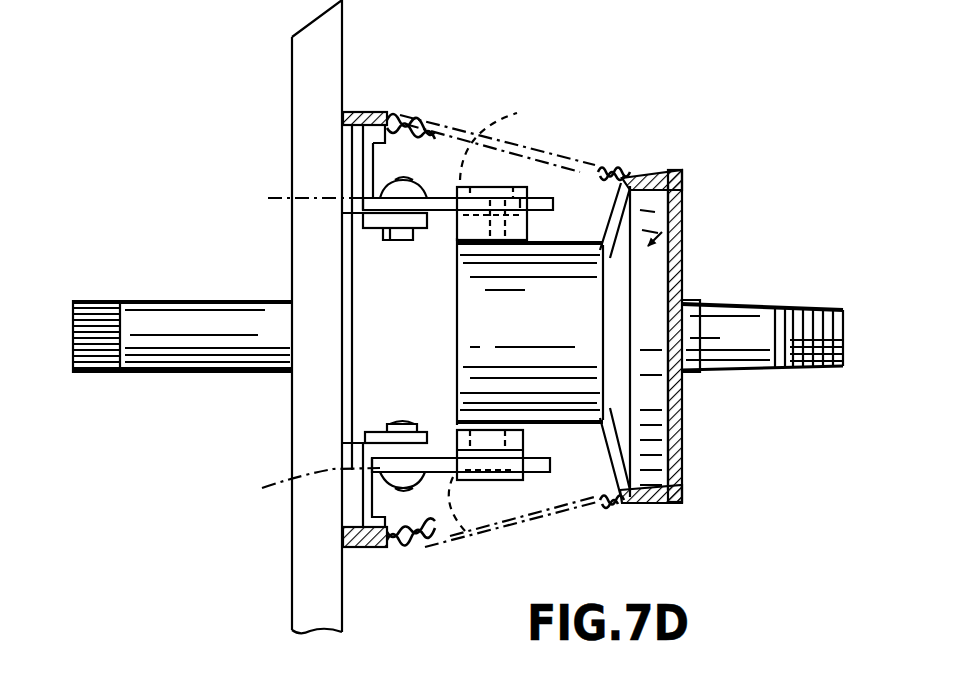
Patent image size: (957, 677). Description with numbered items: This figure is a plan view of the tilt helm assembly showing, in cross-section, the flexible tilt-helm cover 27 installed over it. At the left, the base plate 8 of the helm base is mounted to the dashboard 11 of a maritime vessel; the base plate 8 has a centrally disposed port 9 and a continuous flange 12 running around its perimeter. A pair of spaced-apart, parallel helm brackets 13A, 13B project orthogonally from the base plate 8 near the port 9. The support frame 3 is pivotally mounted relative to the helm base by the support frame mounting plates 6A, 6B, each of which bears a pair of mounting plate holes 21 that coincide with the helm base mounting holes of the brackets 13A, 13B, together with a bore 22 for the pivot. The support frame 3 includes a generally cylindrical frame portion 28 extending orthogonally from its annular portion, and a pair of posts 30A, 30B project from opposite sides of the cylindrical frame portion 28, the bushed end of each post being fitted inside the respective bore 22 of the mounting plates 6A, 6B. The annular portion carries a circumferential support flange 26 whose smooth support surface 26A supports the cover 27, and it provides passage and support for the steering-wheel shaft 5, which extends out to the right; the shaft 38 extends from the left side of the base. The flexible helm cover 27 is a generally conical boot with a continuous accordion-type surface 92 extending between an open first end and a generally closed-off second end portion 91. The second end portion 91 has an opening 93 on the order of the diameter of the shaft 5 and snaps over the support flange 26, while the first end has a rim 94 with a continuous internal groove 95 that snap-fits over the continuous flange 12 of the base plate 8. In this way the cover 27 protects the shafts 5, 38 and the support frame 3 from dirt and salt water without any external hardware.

The support frame 3 is at (685, 205).
The steering-wheel shaft 5 is at (747, 362).
The support frame mounting plate 6A is at (543, 470).
The support frame mounting plate 6B is at (600, 163).
The base plate 8 is at (357, 162).
The port 9 is at (357, 293).
The dashboard 11 is at (310, 582).
The continuous flange 12 is at (372, 118).
The helm bracket 13A is at (443, 232).
The helm bracket 13B is at (433, 430).
The mounting plate holes 21 is at (355, 352).
The bore 22 is at (487, 147).
The support flange 26 is at (670, 175).
The smooth support surface 26A is at (654, 360).
The flexible helm cover 27 is at (703, 438).
The cylindrical frame portion 28 is at (548, 337).
The post 30A is at (533, 442).
The post 30B is at (525, 228).
The shaft 38 is at (145, 375).
The second end portion 91 is at (685, 252).
The accordion-type surface 92 is at (545, 195).
The opening 93 is at (685, 297).
The rim 94 is at (357, 112).
The continuous internal groove 95 is at (343, 525).